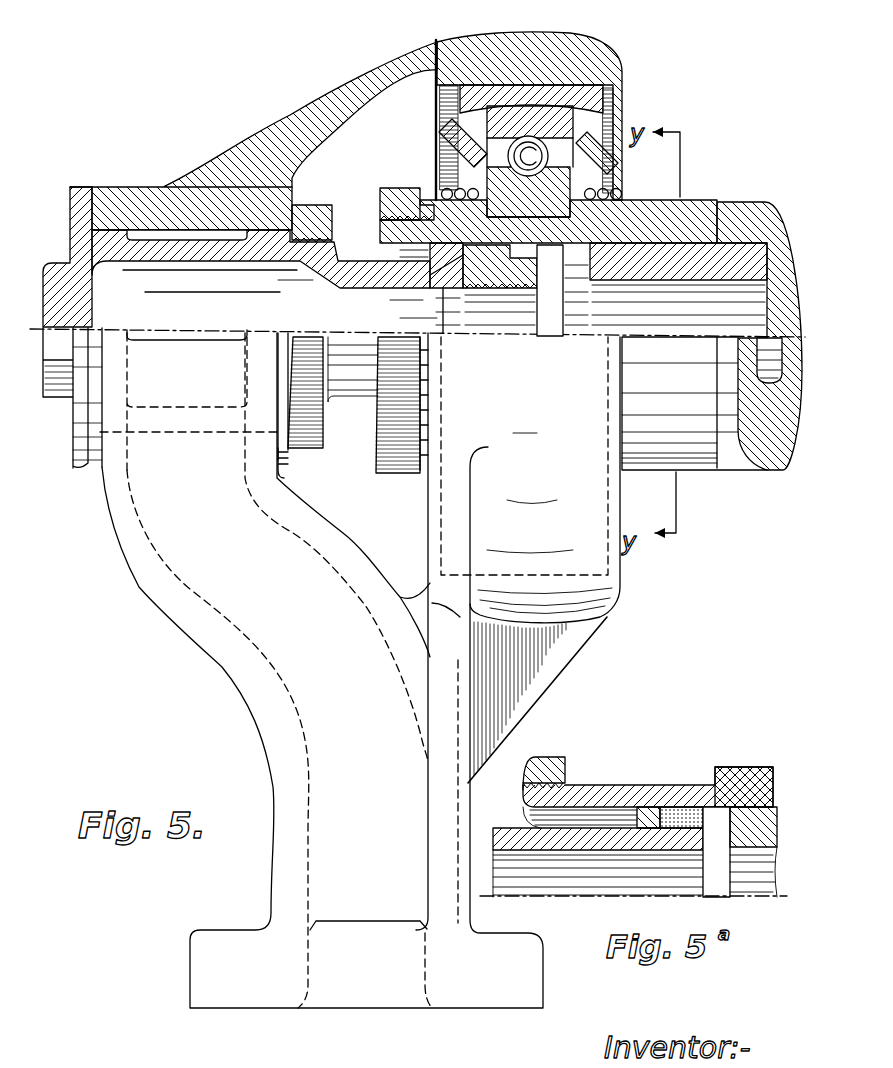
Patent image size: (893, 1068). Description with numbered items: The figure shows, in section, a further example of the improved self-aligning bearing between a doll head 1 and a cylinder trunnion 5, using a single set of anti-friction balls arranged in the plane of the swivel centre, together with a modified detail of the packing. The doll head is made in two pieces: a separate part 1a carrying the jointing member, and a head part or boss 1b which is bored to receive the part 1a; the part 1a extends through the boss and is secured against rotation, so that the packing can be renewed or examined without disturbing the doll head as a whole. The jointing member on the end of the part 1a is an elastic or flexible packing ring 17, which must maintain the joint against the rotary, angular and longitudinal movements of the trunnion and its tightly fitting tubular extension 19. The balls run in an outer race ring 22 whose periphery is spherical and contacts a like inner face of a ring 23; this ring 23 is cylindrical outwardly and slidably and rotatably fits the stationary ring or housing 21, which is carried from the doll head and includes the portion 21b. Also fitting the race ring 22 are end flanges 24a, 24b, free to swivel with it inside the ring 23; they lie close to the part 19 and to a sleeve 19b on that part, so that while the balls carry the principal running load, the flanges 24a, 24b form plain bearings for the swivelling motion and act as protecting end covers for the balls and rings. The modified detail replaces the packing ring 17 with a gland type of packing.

The frame / pedestal standard 1 is at (325, 597).
The part of the doll head 1a is at (444, 355).
The head part or boss 1b is at (167, 187).
The cylinder trunnion 5 is at (727, 277).
The packing ring 17 is at (553, 262).
The tubular extension 19 is at (697, 200).
The sleeve 19b is at (427, 184).
The stationary ring or housing 21 is at (346, 311).
The dome of cover 21b is at (253, 114).
The outer race ring 22 is at (530, 161).
The ring 23 is at (572, 100).
The end flange 24a is at (476, 117).
The end flange 24b is at (598, 185).